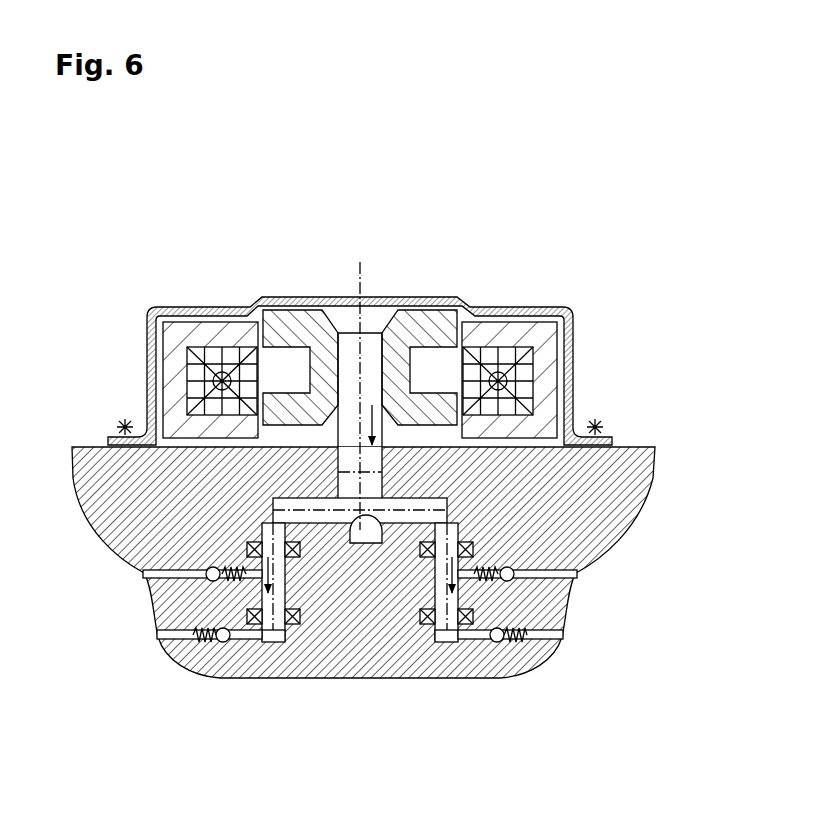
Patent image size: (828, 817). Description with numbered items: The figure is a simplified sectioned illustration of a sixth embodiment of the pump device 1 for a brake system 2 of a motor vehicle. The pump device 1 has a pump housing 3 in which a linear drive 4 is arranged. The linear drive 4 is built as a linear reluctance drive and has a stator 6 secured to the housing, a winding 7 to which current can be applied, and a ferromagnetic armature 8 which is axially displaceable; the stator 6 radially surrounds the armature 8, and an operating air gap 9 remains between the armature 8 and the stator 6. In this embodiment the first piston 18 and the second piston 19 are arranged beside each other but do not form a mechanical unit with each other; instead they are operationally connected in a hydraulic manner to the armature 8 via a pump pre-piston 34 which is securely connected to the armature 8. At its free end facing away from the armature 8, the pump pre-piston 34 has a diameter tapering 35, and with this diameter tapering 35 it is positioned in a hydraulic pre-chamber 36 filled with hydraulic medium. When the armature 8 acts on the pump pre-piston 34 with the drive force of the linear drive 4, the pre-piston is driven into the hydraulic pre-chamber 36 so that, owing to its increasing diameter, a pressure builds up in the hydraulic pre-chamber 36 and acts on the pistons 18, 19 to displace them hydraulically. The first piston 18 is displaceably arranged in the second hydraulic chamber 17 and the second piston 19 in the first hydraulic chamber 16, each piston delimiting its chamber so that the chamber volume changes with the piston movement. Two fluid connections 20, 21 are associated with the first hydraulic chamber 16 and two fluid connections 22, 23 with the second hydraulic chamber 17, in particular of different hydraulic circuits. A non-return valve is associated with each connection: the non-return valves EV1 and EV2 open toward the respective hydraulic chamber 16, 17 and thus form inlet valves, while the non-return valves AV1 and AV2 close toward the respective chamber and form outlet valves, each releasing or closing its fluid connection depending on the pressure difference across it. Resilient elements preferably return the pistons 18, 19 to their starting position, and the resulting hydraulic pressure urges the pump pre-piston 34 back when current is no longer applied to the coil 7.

The pump device 1 is at (105, 242).
The brake system 2 is at (624, 243).
The pump housing 3 is at (635, 478).
The linear drive 4 is at (488, 300).
The stator 6 is at (550, 378).
The winding 7 is at (530, 352).
The armature 8 is at (270, 317).
The operating air gap 9 is at (253, 315).
The pump pre-piston 34 is at (376, 360).
The diameter tapering 35 is at (352, 543).
The hydraulic pre-chamber 36 is at (290, 503).
The first hydraulic chamber 16 is at (322, 595).
The second hydraulic chamber 17 is at (400, 595).
The first piston 18 is at (462, 600).
The second piston 19 is at (265, 602).
The fluid connection 20 is at (245, 551).
The fluid connection 21 is at (267, 642).
The fluid connection 22 is at (476, 551).
The fluid connection 23 is at (477, 645).
The non-return valve EV1 is at (181, 578).
The non-return valve AV1 is at (185, 636).
The non-return valve EV2 is at (541, 578).
The non-return valve AV2 is at (533, 636).